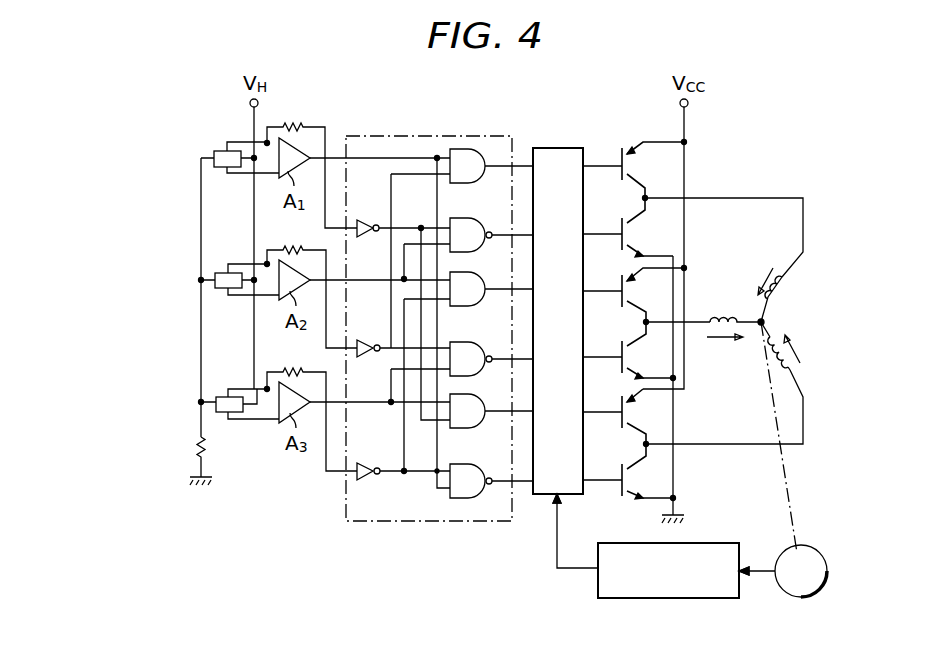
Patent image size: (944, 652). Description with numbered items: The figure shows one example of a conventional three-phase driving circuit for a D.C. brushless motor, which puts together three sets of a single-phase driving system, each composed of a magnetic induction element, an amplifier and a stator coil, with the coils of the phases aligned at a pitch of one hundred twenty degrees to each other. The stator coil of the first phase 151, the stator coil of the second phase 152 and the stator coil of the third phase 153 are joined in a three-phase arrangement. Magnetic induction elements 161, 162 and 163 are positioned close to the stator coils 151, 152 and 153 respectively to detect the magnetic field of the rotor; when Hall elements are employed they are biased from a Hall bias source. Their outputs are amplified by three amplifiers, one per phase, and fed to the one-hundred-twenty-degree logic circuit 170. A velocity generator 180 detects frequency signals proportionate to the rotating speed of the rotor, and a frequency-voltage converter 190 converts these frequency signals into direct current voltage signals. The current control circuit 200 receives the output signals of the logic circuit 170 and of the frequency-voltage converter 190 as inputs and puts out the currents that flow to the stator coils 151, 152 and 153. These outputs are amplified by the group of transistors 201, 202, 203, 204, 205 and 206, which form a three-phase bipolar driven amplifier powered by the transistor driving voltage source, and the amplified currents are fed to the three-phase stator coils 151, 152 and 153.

The stator coil of the first phase 151 is at (780, 290).
The stator coil of the second phase 152 is at (724, 318).
The stator coil of the third phase 153 is at (793, 363).
The magnetic induction element 161 is at (220, 151).
The magnetic induction element 162 is at (224, 273).
The magnetic induction element 163 is at (223, 397).
The 120° logic circuit 170 is at (452, 136).
The velocity generator 180 is at (802, 597).
The frequency-voltage converter 190 is at (717, 598).
The current control circuit 200 is at (557, 148).
The transistor 201 is at (654, 169).
The transistor 202 is at (647, 227).
The transistor 203 is at (654, 294).
The transistor 204 is at (649, 350).
The transistor 205 is at (643, 416).
The transistor 206 is at (649, 471).